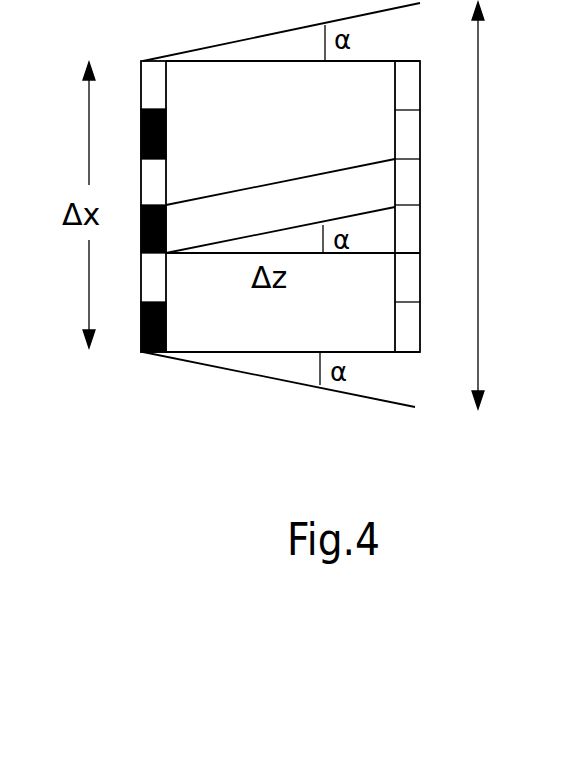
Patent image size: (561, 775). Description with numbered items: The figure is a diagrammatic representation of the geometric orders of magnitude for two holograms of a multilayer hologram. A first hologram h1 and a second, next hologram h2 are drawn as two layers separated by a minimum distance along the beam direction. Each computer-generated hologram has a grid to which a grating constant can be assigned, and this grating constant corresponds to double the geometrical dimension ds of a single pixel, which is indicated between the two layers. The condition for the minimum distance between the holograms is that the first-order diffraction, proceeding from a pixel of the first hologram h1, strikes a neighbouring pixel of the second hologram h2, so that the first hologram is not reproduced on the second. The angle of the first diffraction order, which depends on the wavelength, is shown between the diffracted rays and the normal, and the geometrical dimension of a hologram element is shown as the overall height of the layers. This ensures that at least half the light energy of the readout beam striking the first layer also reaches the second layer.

The first hologram h1 is at (157, 182).
The second hologram h2 is at (411, 182).
The geometrical dimension of a pixel ds is at (280, 206).